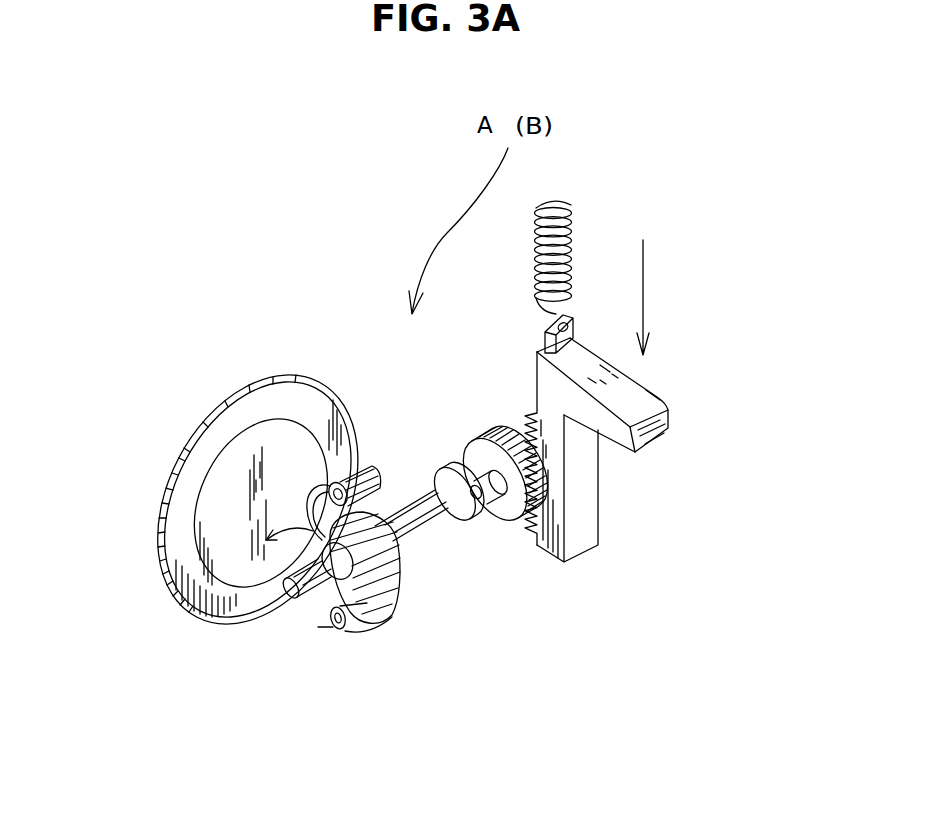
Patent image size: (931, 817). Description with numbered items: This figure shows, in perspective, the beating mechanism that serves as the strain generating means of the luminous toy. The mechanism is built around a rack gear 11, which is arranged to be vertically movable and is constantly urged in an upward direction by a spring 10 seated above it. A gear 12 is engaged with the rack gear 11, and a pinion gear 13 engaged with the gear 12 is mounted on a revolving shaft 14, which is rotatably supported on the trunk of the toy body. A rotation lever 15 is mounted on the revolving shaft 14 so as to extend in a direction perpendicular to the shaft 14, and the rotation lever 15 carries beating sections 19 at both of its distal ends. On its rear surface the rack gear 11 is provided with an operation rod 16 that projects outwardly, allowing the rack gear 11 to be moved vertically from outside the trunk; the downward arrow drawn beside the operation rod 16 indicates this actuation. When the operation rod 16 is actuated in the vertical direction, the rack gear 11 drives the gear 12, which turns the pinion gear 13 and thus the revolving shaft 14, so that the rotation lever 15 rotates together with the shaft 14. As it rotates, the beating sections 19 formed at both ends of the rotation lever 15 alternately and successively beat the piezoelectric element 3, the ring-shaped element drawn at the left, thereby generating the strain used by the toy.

The piezoelectric element 3 is at (210, 465).
The spring 10 is at (570, 254).
The rack gear 11 is at (600, 528).
The gear 12 is at (480, 452).
The pinion gear 13 is at (459, 527).
The revolving shaft 14 is at (307, 580).
The rotation lever 15 is at (322, 482).
The operation rod 16 is at (672, 425).
The beating sections 19 is at (360, 450).